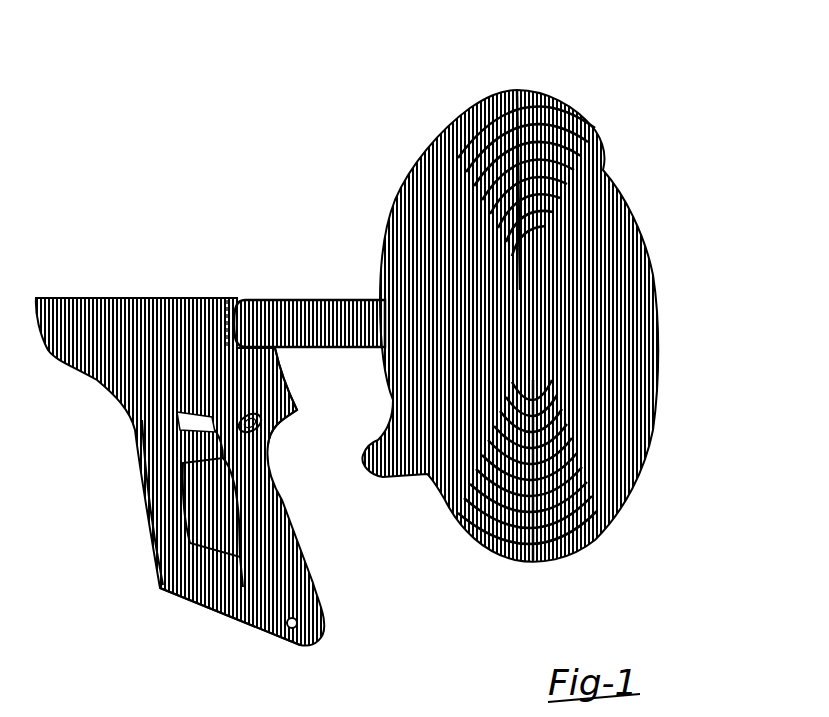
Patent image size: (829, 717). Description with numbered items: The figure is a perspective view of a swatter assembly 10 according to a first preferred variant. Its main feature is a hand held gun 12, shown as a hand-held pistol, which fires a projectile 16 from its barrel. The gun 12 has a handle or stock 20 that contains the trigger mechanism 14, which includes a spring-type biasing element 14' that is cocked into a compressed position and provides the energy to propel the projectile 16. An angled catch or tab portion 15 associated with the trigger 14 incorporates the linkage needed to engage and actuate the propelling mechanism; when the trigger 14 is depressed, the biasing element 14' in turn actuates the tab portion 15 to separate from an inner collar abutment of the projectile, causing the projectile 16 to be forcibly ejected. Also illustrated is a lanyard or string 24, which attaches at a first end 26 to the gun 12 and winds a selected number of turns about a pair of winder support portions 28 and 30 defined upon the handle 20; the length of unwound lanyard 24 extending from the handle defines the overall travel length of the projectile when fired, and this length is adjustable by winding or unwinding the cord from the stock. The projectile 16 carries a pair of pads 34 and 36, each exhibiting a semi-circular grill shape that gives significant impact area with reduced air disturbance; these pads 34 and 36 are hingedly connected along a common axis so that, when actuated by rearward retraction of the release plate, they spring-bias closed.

The portable fan assembly 10 is at (290, 188).
The hand held gun 12 is at (122, 322).
The trigger 14 is at (299, 464).
The biasing element 14' is at (301, 419).
The angled catch or tab portion 15 is at (285, 390).
The projectile 16 is at (654, 145).
The handle or stock 20 is at (163, 488).
The lanyard or string/cord 24 is at (160, 583).
The first end of the lanyard 26 is at (285, 635).
The winder support portion 28 is at (230, 533).
The winder support portion 30 is at (200, 430).
The pad 34 is at (458, 112).
The pad 36 is at (595, 502).